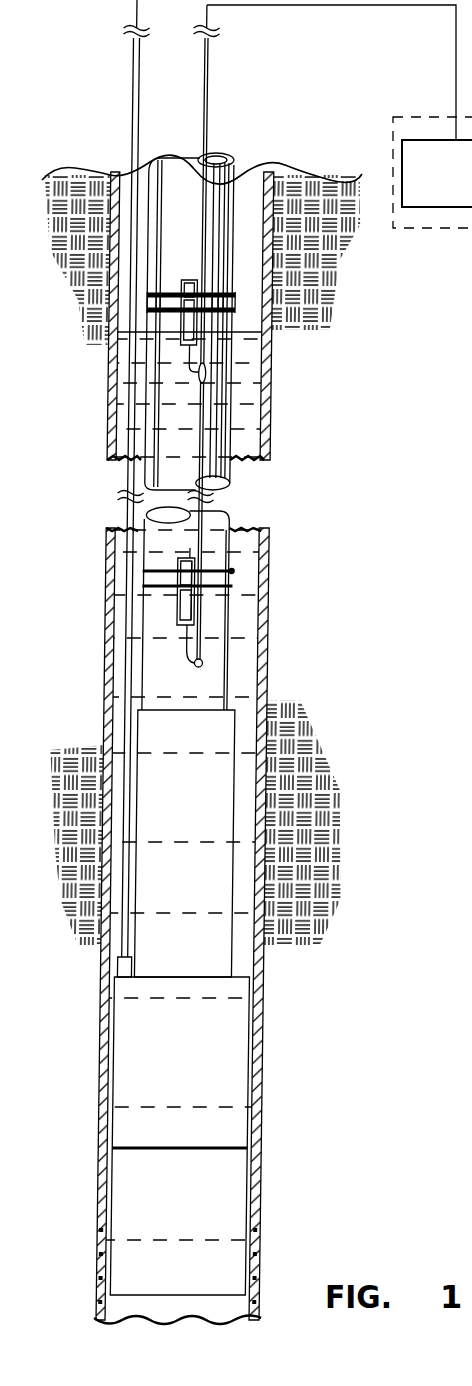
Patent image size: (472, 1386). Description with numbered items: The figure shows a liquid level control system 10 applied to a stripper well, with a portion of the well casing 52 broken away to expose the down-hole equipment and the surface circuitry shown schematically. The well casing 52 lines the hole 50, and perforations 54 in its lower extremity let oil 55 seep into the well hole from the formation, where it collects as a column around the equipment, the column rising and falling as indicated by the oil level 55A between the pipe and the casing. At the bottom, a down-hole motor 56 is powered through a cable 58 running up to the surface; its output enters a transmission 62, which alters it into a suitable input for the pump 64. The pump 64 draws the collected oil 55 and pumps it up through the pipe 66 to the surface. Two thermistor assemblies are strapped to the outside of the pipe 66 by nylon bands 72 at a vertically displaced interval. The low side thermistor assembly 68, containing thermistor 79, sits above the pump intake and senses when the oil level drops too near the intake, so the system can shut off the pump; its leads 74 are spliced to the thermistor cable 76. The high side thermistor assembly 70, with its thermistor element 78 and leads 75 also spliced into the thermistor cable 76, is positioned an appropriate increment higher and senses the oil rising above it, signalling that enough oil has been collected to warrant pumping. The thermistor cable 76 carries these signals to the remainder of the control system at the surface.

The liquid level control system 10 is at (378, 304).
The well hole 50 is at (245, 192).
The well casing 52 is at (268, 681).
The perforations 54 is at (100, 1283).
The oil 55 is at (258, 716).
The liquid level 55A is at (129, 332).
The down-hole motor 56 is at (262, 742).
The cable 58 is at (141, 100).
The transmission 62 is at (233, 1040).
The pump 64 is at (214, 829).
The pipe 66 is at (178, 182).
The low side thermistor assembly 68 is at (188, 598).
The high side thermistor assembly 70 is at (206, 318).
The nylon bands 72 is at (232, 290).
The leads 74 is at (194, 662).
The leads 75 is at (200, 373).
The thermistor cable 76 is at (210, 98).
The thermistor element 78 is at (192, 279).
The thermistor 79 is at (188, 557).